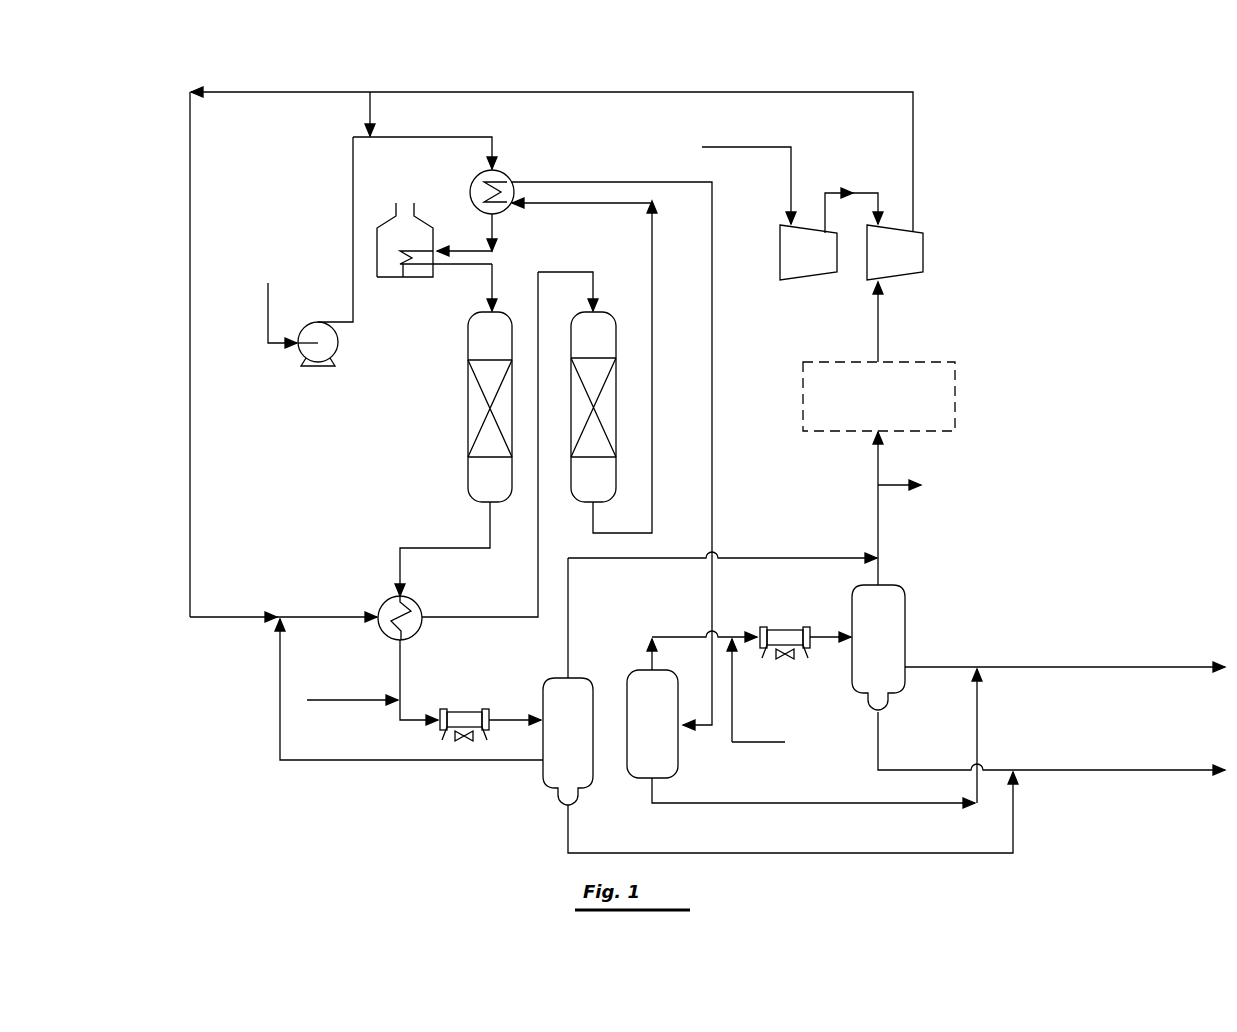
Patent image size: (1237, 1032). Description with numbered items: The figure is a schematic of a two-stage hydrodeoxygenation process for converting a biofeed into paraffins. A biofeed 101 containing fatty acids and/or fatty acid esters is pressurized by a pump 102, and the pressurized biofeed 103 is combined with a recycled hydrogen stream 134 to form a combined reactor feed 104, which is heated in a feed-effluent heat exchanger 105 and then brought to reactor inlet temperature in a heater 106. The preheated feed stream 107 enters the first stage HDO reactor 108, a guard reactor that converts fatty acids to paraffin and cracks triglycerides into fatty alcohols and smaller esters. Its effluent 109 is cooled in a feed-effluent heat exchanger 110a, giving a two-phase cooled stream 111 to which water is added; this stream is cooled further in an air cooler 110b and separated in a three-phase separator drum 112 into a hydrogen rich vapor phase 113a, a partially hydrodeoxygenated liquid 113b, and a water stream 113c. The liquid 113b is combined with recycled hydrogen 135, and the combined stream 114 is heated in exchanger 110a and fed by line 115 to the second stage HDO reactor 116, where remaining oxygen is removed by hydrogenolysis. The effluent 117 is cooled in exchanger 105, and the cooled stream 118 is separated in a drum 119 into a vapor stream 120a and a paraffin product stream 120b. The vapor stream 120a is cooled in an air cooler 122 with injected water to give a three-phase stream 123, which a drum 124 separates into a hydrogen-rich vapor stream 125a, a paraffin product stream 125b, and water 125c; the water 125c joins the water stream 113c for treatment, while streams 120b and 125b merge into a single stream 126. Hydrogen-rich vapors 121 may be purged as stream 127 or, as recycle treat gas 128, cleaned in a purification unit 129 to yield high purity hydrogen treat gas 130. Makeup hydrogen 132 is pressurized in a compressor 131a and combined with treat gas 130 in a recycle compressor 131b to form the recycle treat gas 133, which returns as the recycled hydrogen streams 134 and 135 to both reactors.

The biofeed 101 is at (267, 310).
The pump 102 is at (298, 352).
The pressurized biofeed 103 is at (352, 200).
The combined reactor feed 104 is at (418, 135).
The feed-effluent heat exchanger 105 is at (470, 195).
The heater 106 is at (387, 278).
The preheated feed stream 107 is at (487, 278).
The first stage HDO reactor 108 is at (467, 408).
The effluent 109 is at (420, 548).
The feed-effluent heat exchanger 110a is at (388, 592).
The air cooler 110b is at (468, 708).
The cooled stream 111 is at (391, 674).
The three-phase separator drum 112 is at (557, 678).
The hydrogen rich vapor phase 113a is at (570, 597).
The partially hydrodeoxygenated liquid 113b is at (280, 693).
The water stream 113c is at (760, 852).
The combined stream 114 is at (335, 615).
The second reactor feed line 115 is at (537, 548).
The second stage HDO reactor 116 is at (606, 302).
The effluent 117 is at (653, 515).
The cooled stream 118 is at (585, 180).
The drum 119 is at (679, 747).
The vapor stream 120a is at (693, 635).
The paraffin product stream 120b is at (822, 804).
The hydrogen-rich vapors 121 is at (876, 528).
The air cooler 122 is at (783, 628).
The three-phase stream 123 is at (825, 638).
The drum 124 is at (905, 678).
The hydrogen-rich vapor stream 125a is at (880, 570).
The paraffin product stream 125b is at (932, 665).
The water 125c is at (875, 730).
The single stream 126 is at (1020, 668).
The purge stream 127 is at (888, 492).
The recycle treat gas 128 is at (878, 445).
The purification unit 129 is at (802, 403).
The high purity hydrogen treat gas 130 is at (877, 338).
The compressor 131a is at (777, 252).
The recycle compressor 131b is at (895, 280).
The makeup hydrogen 132 is at (787, 165).
The recycle treat gas 133 is at (768, 90).
The recycled hydrogen stream 134 is at (368, 102).
The recycled hydrogen 135 is at (192, 565).